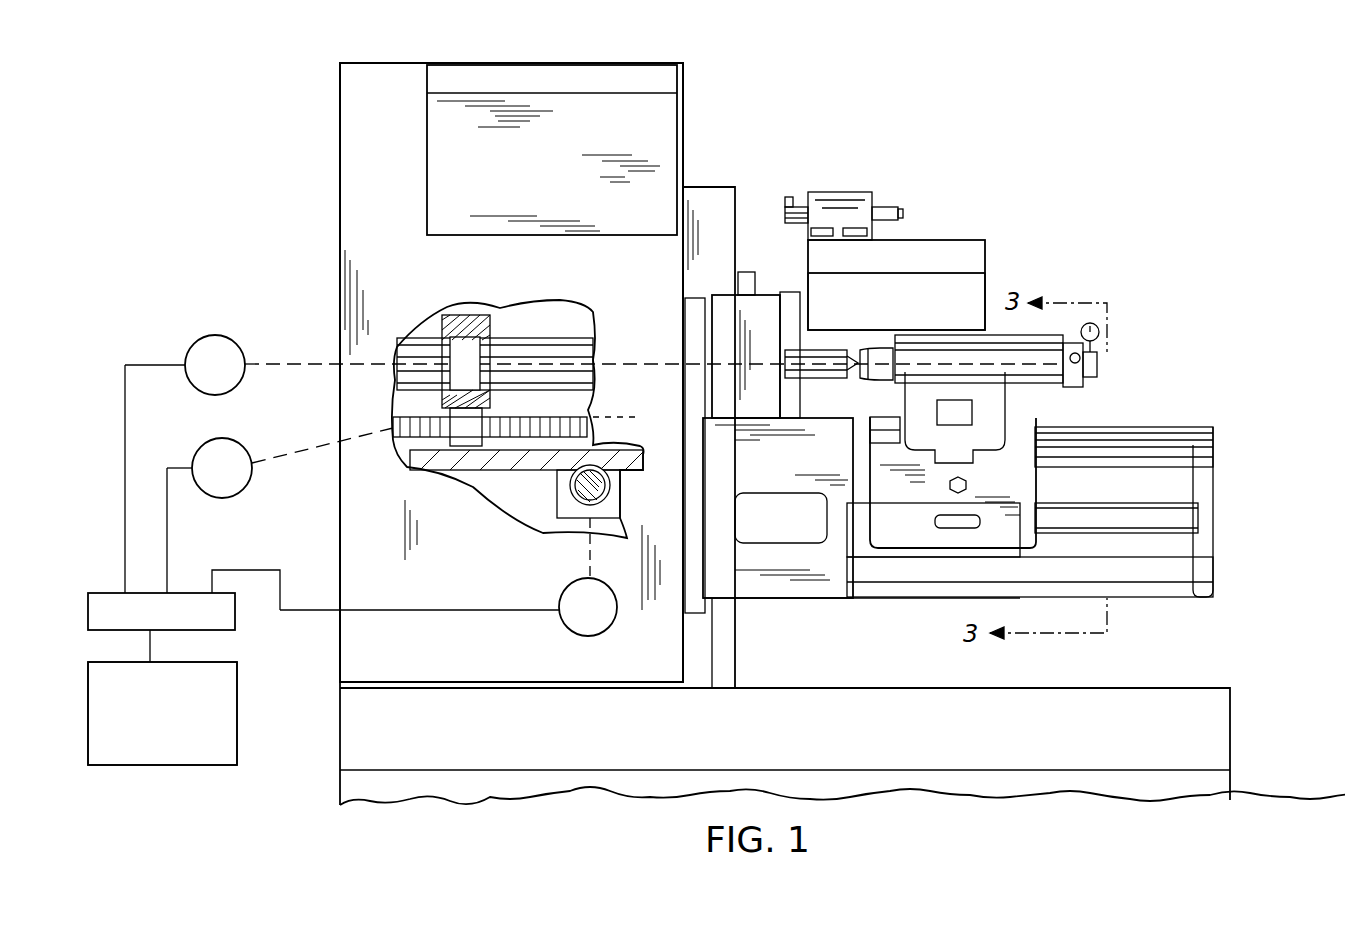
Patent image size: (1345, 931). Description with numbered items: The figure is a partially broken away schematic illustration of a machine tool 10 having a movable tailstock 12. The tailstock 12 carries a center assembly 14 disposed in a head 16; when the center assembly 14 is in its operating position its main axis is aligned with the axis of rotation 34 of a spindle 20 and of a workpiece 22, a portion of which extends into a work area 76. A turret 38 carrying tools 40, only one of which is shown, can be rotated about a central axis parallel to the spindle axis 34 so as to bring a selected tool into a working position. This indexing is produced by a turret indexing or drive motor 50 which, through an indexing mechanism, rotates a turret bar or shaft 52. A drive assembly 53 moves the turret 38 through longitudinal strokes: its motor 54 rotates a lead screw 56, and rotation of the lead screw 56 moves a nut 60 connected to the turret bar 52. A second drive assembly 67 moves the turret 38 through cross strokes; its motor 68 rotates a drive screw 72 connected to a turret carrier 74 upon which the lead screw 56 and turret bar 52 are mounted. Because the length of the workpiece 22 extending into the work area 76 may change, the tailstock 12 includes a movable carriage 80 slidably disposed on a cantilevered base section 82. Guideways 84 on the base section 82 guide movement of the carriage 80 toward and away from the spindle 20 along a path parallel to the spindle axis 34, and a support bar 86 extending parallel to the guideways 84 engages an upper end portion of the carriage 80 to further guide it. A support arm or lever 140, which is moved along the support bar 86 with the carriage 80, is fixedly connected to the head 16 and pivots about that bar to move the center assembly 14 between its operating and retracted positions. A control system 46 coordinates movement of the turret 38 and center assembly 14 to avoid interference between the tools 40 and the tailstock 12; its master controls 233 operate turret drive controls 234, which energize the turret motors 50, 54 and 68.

The machine tool 10 is at (842, 128).
The tailstock 12 is at (1105, 370).
The center assembly 14 is at (880, 343).
The head 16 is at (952, 340).
The spindle 20 is at (760, 302).
The workpiece 22 is at (845, 317).
The axis of rotation 34 is at (730, 357).
The turret 38 is at (990, 243).
The tools 40 is at (890, 160).
The control system 46 is at (240, 738).
The turret indexing or drive motor 50 is at (230, 342).
The turret bar or shaft 52 is at (430, 342).
The drive assembly 53 is at (387, 470).
The motor 54 is at (205, 440).
The lead screw 56 is at (410, 440).
The nut 60 is at (470, 313).
The drive assembly 67 is at (567, 563).
The motor 68 is at (580, 628).
The drive screw 72 is at (570, 510).
The turret carrier 74 is at (503, 462).
The work area 76 is at (857, 297).
The carriage 80 is at (1022, 490).
The cantilevered base section 82 is at (1218, 490).
The guideways 84 is at (1195, 538).
The support bar 86 is at (1170, 432).
The support arm or lever 140 is at (993, 403).
The master controls 233 is at (190, 755).
The turret drive controls 234 is at (227, 618).